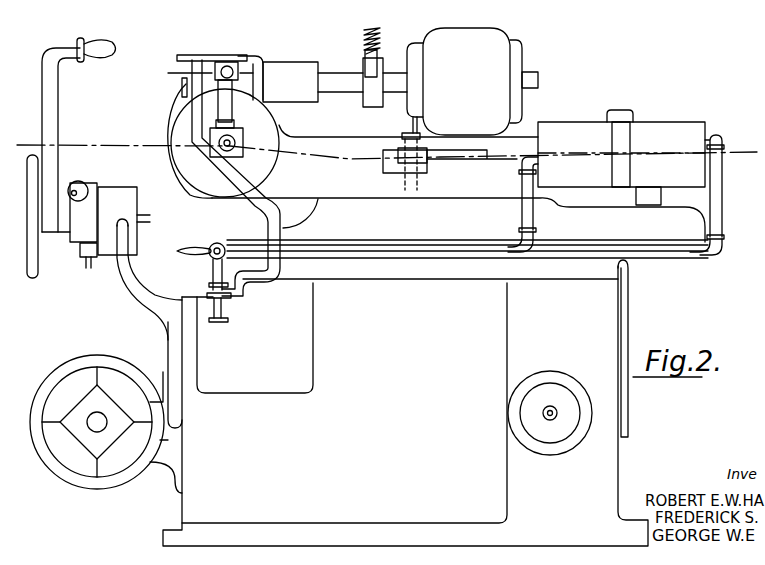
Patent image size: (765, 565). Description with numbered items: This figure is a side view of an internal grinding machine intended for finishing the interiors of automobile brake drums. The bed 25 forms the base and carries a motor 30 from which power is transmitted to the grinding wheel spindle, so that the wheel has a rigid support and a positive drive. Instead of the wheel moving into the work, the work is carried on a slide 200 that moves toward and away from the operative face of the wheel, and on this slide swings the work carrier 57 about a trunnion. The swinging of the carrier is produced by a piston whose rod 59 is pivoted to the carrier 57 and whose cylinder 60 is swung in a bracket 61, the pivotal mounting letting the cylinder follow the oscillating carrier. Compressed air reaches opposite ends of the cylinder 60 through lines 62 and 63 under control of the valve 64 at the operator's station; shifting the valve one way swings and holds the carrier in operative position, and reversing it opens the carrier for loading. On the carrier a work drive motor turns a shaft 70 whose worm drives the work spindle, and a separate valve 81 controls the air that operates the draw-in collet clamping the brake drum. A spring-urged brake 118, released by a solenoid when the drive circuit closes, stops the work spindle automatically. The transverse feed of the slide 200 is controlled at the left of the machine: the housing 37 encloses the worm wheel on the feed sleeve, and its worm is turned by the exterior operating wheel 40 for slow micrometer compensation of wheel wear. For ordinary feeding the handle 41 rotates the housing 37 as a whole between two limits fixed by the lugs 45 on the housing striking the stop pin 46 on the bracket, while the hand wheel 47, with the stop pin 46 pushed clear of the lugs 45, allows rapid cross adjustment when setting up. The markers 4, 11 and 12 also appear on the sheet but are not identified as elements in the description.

The section line 4- 4 is at (28, 146).
The motor 11 is at (462, 44).
The section line 12- 12 is at (176, 78).
The bed 25 is at (577, 308).
The motor 30 is at (110, 380).
The housing 37 is at (77, 180).
The operating wheel 40 is at (86, 182).
The handle 41 is at (47, 132).
The lugs 45 is at (88, 258).
The stop pin 46 is at (83, 265).
The hand wheel 47 is at (33, 280).
The work carrier 57 is at (323, 143).
The piston rod 59 is at (508, 152).
The cylinder 60 is at (572, 133).
The bracket 61 is at (622, 115).
The air line 62 is at (533, 221).
The air line 63 is at (723, 219).
The valve 64 is at (210, 255).
The shaft 70 is at (330, 80).
The valve 81 is at (237, 61).
The brake 118 is at (370, 62).
The slide 200 is at (657, 198).